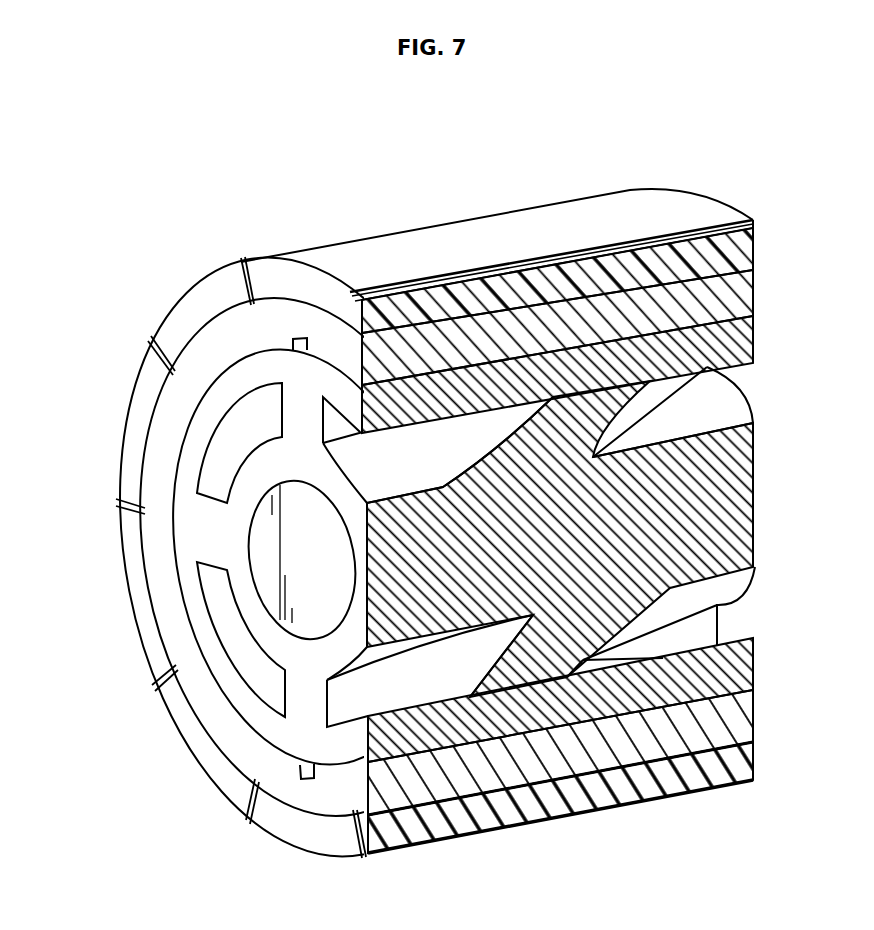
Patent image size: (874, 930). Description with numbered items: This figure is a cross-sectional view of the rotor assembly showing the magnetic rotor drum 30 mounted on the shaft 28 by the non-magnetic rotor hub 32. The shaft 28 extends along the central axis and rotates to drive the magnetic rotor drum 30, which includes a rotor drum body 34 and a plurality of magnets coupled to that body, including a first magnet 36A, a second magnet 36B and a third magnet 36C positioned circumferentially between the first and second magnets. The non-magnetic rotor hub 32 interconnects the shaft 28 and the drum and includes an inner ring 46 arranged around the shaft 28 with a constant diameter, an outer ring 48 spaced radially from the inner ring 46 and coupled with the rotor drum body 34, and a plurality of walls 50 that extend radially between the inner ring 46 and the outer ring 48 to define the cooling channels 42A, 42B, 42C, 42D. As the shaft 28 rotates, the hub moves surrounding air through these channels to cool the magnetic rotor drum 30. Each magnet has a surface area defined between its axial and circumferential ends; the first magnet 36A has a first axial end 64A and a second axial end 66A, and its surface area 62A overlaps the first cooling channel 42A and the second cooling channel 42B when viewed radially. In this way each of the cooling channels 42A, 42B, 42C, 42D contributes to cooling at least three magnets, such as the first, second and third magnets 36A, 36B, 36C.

The magnetic rotor drum 30 is at (213, 190).
The shaft 28 is at (320, 592).
The non-magnetic rotor hub 32 is at (268, 757).
The rotor drum body 34 is at (200, 347).
The first magnet 36A is at (516, 262).
The second magnet 36B is at (200, 297).
The third magnet 36C is at (307, 262).
The first cooling channel 42A is at (382, 468).
The second cooling channel 42B is at (212, 478).
The cooling channel 42C is at (235, 637).
The cooling channel 42D is at (330, 706).
The inner ring 46 is at (430, 645).
The outer ring 48 is at (466, 732).
The plurality of walls 50 is at (482, 656).
The surface area 62A is at (548, 312).
The first axial end 64A is at (345, 303).
The second axial end 66A is at (757, 242).